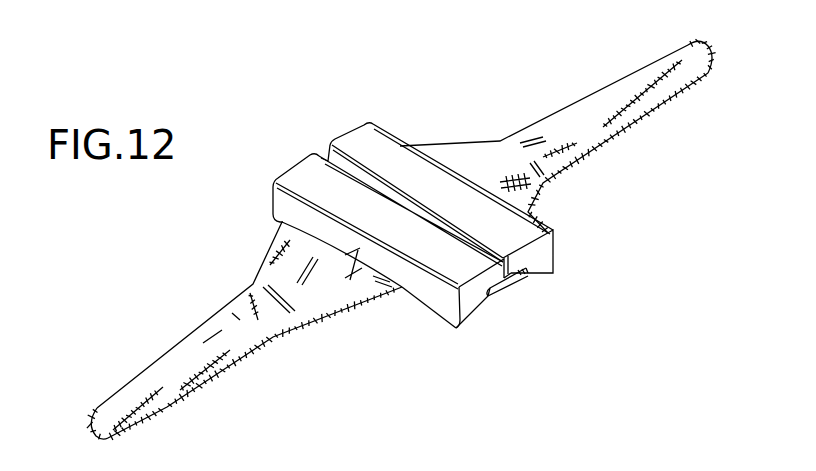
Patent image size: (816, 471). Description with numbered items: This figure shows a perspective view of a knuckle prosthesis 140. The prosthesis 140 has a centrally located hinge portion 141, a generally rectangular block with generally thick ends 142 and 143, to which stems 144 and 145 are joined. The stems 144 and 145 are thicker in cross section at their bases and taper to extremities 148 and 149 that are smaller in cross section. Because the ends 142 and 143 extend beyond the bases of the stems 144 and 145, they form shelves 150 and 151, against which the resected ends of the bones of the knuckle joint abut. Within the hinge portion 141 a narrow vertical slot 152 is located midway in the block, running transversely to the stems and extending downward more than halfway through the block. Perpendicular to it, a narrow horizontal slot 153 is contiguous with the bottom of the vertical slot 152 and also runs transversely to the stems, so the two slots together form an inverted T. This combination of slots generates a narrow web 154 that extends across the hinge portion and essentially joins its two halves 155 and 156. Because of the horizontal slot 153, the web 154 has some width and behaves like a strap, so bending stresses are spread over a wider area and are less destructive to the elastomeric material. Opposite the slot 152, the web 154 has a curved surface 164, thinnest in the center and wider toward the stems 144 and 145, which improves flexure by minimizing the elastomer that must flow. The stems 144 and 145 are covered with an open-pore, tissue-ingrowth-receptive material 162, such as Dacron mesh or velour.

The knuckle prosthesis 140 is at (580, 279).
The hinge portion 141 is at (467, 338).
The end 142 is at (285, 211).
The end 143 is at (556, 243).
The stem 144 is at (165, 360).
The stem 145 is at (623, 92).
The extremity 148 is at (101, 416).
The extremity 149 is at (708, 51).
The shelf 150 is at (423, 298).
The shelf 151 is at (393, 137).
The vertical slot 152 is at (344, 112).
The horizontal slot 153 is at (493, 297).
The web 154 is at (524, 279).
The half of hinge portion 155 is at (311, 177).
The half of hinge portion 156 is at (367, 138).
The tissue-ingrowth-receptive material 162 is at (510, 144).
The curved surface 164 is at (493, 300).